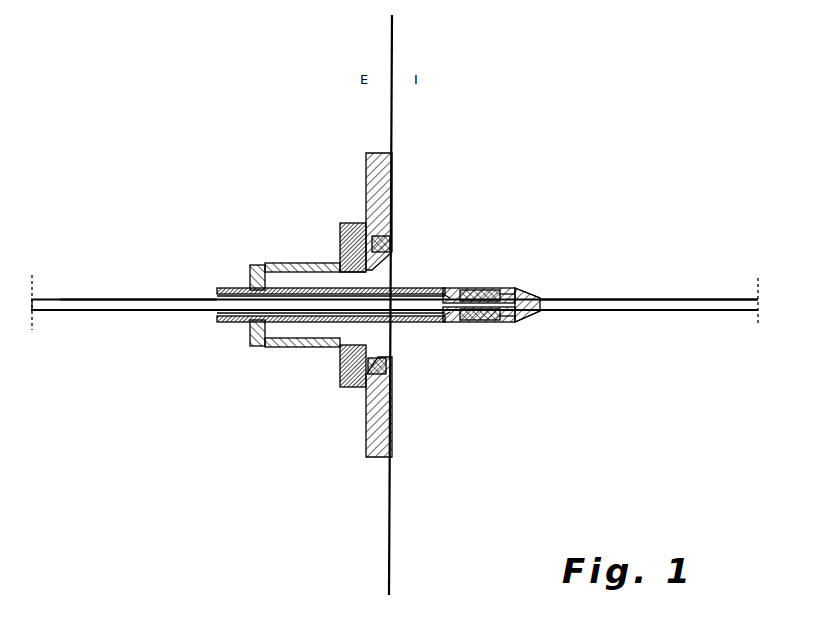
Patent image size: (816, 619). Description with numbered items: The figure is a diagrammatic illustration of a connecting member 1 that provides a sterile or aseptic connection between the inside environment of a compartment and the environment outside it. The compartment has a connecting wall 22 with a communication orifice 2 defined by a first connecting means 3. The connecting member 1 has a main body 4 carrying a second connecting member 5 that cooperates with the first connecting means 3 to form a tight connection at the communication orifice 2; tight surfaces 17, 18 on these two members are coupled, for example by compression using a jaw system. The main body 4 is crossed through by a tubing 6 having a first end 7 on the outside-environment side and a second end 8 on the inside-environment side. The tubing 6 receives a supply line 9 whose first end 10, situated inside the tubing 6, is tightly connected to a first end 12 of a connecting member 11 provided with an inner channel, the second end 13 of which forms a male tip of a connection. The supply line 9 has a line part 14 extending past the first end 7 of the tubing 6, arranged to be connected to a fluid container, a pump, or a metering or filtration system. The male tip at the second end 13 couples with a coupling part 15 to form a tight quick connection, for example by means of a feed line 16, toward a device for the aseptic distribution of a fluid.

The connecting member 1 is at (258, 226).
The communication orifice 2 is at (386, 279).
The first connecting means 3 is at (395, 178).
The main body 4 is at (308, 262).
The second connecting member 5 is at (348, 222).
The tubing 6 is at (368, 318).
The first end 7 is at (233, 325).
The second end 8 is at (488, 323).
The supply line 9 is at (168, 312).
The first end 10 is at (442, 323).
The connecting member 11 is at (482, 290).
The first end 12 is at (453, 323).
The second end 13 is at (505, 323).
The line part 14 is at (56, 312).
The coupling part 15 is at (508, 290).
The feed line 16 is at (630, 312).
The tight surface 17 is at (353, 268).
The tight surface 18 is at (380, 243).
The connecting wall 22 is at (391, 521).